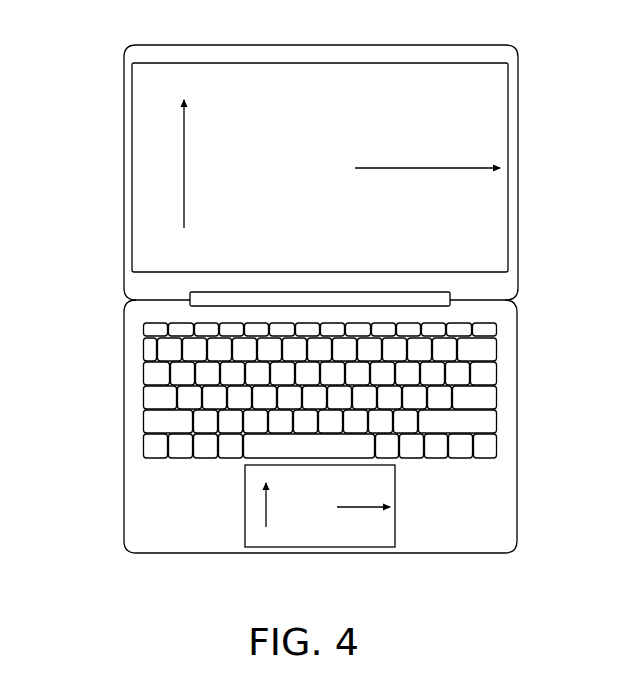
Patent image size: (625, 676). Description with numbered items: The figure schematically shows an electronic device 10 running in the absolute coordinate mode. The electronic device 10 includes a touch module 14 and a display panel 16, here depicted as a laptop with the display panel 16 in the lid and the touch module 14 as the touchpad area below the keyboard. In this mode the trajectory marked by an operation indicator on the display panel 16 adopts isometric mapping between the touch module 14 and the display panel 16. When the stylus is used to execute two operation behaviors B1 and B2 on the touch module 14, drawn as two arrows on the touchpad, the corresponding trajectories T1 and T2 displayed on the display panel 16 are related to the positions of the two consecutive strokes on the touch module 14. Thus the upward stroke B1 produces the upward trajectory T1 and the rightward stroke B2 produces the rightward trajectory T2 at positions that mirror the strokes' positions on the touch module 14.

The electronic device 10 is at (110, 37).
The display panel 16 is at (133, 200).
The touch module 14 is at (396, 535).
The trajectory T1 is at (184, 137).
The trajectory T2 is at (481, 170).
The operation behavior B1 is at (266, 524).
The operation behavior B2 is at (358, 507).